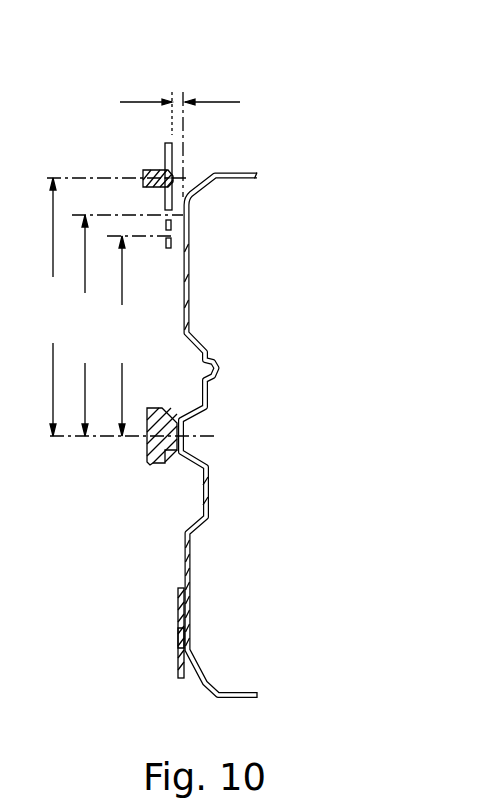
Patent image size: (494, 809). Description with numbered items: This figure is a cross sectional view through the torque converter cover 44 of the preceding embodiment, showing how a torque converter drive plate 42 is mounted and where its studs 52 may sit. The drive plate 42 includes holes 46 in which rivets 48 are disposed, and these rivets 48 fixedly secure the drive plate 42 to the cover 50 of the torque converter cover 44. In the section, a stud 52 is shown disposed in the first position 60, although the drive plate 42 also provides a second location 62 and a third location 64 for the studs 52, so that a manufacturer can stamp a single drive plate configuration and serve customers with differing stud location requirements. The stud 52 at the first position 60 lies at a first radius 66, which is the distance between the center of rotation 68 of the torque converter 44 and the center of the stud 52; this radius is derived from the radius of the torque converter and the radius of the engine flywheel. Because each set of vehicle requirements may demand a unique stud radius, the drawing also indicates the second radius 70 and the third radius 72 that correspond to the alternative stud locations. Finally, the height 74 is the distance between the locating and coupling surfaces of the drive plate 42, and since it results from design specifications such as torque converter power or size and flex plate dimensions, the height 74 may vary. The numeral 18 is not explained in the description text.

The wall panel system 18 is at (5, 319).
The torque converter drive plate 42 is at (178, 670).
The torque converter cover 44 is at (43, 125).
The hole 46 is at (180, 622).
The rivet 48 is at (178, 643).
The cover 50 is at (207, 690).
The stud 52 is at (145, 173).
The first position 60 is at (160, 170).
The second location 62 is at (172, 212).
The third location 64 is at (170, 241).
The first radius 66 is at (54, 307).
The center of rotation 68 is at (150, 440).
The second radius 70 is at (84, 325).
The third radius 72 is at (120, 336).
The height 74 is at (183, 134).